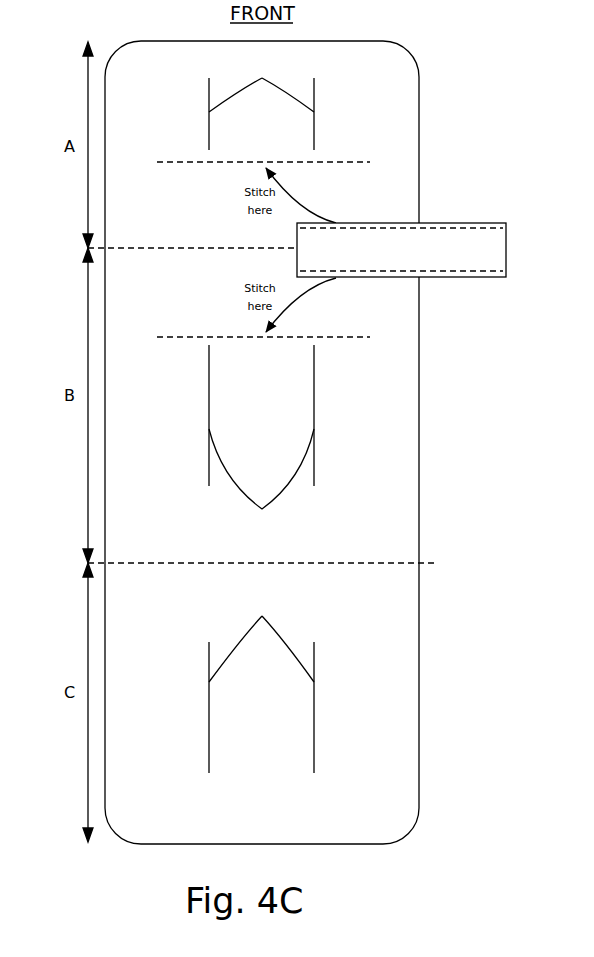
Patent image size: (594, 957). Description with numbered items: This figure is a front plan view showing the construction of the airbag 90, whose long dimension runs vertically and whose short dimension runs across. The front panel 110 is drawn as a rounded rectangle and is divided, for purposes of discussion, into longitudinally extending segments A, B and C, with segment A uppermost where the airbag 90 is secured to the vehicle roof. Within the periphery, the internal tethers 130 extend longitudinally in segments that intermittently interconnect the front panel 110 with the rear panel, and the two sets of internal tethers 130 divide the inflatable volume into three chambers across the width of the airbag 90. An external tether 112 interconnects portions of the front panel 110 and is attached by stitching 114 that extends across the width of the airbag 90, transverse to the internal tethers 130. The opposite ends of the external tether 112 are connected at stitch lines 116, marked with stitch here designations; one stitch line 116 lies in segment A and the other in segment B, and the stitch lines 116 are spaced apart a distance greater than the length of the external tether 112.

The airbag 90 is at (316, 424).
The front panel 110 is at (388, 392).
The external tether 112 is at (438, 248).
The stitching 114 is at (490, 228).
The stitch lines 116 is at (197, 164).
The internal tethers 130 is at (261, 414).